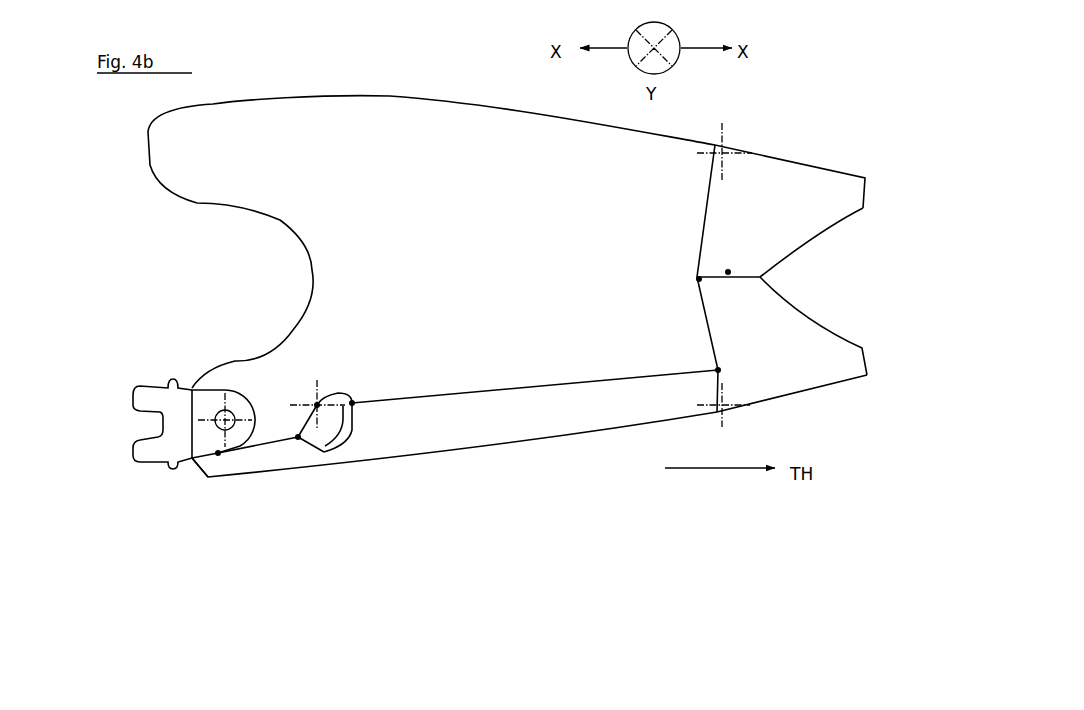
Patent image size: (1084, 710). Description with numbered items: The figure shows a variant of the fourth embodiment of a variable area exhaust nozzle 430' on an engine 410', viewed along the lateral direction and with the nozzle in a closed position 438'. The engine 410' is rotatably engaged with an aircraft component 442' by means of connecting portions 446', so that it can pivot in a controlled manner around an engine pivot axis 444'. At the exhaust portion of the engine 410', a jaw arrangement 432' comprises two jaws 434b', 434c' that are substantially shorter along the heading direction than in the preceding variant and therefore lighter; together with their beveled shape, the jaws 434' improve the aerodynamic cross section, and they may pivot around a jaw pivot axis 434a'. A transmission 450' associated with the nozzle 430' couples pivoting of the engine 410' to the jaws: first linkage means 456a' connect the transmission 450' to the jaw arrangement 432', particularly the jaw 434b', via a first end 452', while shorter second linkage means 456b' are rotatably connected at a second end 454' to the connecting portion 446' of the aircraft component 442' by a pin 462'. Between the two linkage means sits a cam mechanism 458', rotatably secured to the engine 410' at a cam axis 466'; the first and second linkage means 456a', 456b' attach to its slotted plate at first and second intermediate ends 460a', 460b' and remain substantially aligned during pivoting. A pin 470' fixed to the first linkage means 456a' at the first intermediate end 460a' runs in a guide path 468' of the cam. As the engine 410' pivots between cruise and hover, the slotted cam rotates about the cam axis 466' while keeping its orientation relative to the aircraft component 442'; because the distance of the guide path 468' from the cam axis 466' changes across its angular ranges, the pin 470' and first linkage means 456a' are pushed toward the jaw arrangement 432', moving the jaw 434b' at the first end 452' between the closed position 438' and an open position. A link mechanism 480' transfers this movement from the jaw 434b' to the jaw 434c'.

The engine 410' is at (387, 242).
The variable area exhaust nozzle 430' is at (803, 96).
The jaw arrangement 432' is at (823, 162).
The jaws 434' is at (661, 278).
The jaw pivot axis 434a' is at (721, 285).
The jaw 434b' is at (825, 403).
The jaw 434c' is at (835, 246).
The closed position 438' is at (841, 326).
The link mechanism 480' is at (749, 234).
The first end 452' is at (679, 337).
The transmission 450' is at (455, 423).
The first linkage means 456a' is at (615, 425).
The second linkage means 456b' is at (258, 392).
The aircraft component 442' is at (128, 391).
The engine pivot axis 444' is at (204, 393).
The connecting portion 446' is at (155, 501).
The pin 462' is at (203, 489).
The second end 454' is at (244, 496).
The second intermediate end 460b' is at (336, 476).
The cam mechanism 458' is at (361, 447).
The first intermediate end 460a' is at (420, 447).
The cam axis 466' is at (306, 361).
The pin 470' is at (356, 361).
The guide path 468' is at (397, 358).